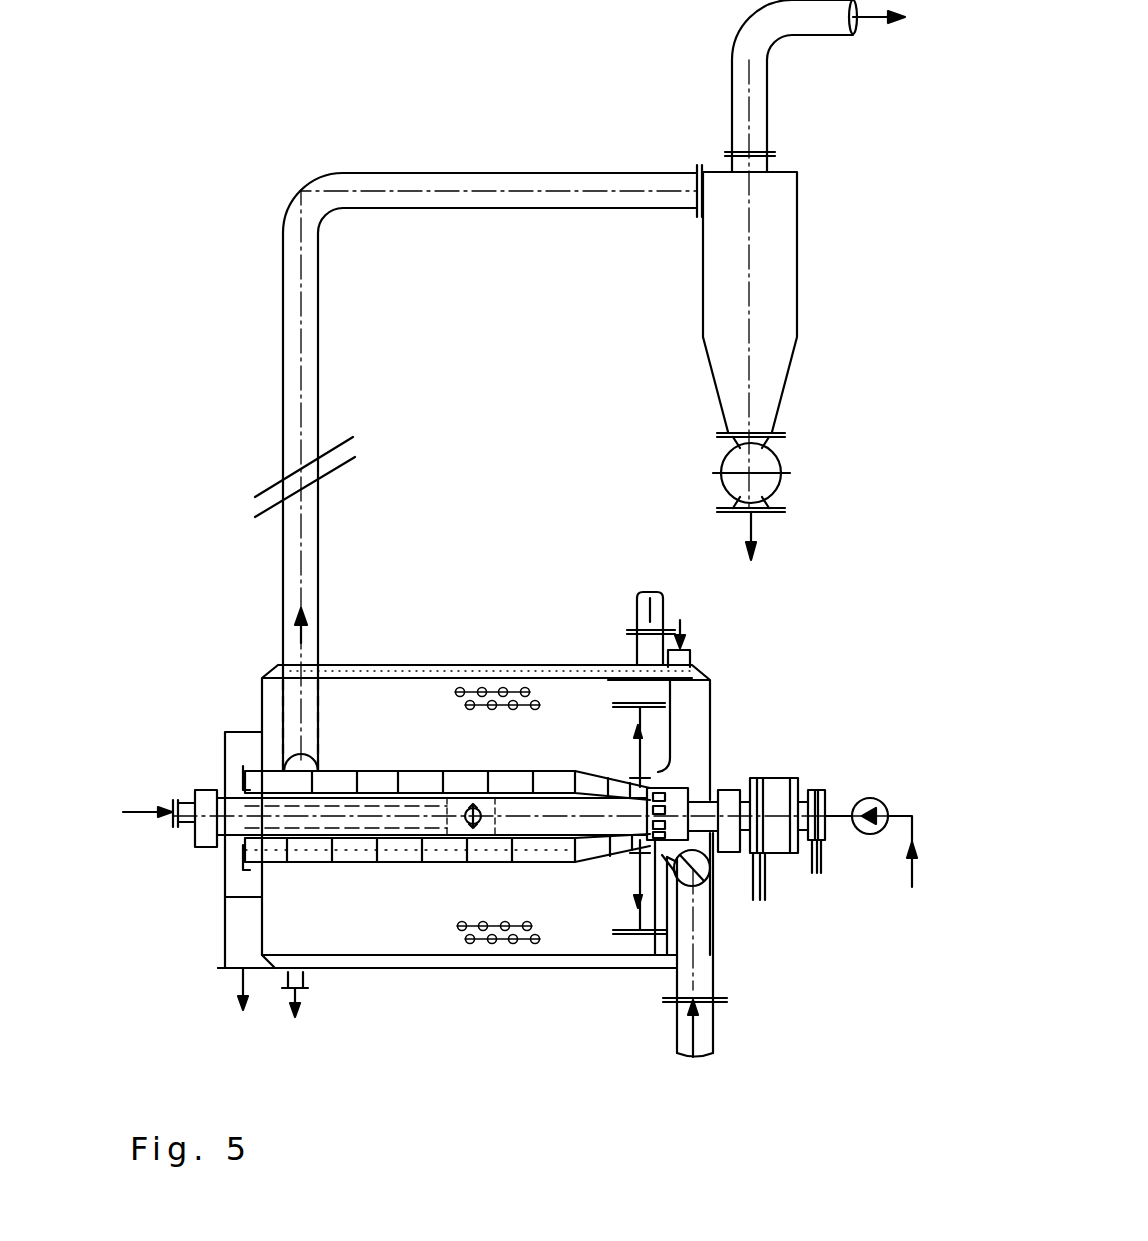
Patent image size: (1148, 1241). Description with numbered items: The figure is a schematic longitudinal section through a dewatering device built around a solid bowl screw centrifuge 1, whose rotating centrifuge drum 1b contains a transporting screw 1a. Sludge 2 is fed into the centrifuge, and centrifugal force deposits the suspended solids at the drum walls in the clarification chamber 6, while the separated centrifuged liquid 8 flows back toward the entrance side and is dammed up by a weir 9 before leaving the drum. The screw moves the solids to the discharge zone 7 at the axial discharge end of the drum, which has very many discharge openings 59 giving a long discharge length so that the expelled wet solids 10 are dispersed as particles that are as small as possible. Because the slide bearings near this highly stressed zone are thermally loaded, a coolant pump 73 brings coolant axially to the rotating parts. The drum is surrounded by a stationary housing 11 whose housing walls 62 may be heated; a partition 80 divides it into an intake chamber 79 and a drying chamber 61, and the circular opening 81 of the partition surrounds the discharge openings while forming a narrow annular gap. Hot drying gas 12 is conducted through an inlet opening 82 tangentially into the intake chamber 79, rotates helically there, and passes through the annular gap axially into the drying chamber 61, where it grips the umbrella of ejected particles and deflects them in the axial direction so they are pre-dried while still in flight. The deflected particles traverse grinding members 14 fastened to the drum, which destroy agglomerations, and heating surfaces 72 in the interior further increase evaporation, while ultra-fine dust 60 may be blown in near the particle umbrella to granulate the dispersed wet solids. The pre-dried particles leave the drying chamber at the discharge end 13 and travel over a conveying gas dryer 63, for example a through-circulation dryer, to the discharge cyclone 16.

The solid bowl screw centrifuge 1 is at (355, 875).
The transporting screw 1a is at (400, 848).
The centrifuge drum 1b is at (375, 771).
The sludge 2 is at (143, 812).
The clarification chamber 6 is at (447, 850).
The discharge zone 7 is at (668, 786).
The centrifuged liquid 8 is at (243, 980).
The weir 9 is at (228, 845).
The wet solids 10 is at (660, 948).
The housing 11 is at (405, 972).
The drying gas 12 is at (713, 1048).
The tangential discharge end 13 is at (295, 752).
The grinding members 14 is at (628, 935).
The discharge cyclone 16 is at (793, 355).
The discharge openings 59 is at (660, 810).
The ultra-fine dust 60 is at (651, 588).
The drying chamber 61 is at (570, 722).
The housing walls 62 is at (430, 672).
The conveying gas dryer 63 is at (283, 358).
The heating surfaces 72 is at (462, 705).
The coolant pump 73 is at (870, 797).
The intake chamber 79 is at (688, 717).
The partition 80 is at (663, 782).
The circular opening 81 is at (712, 885).
The inlet opening 82 is at (702, 860).